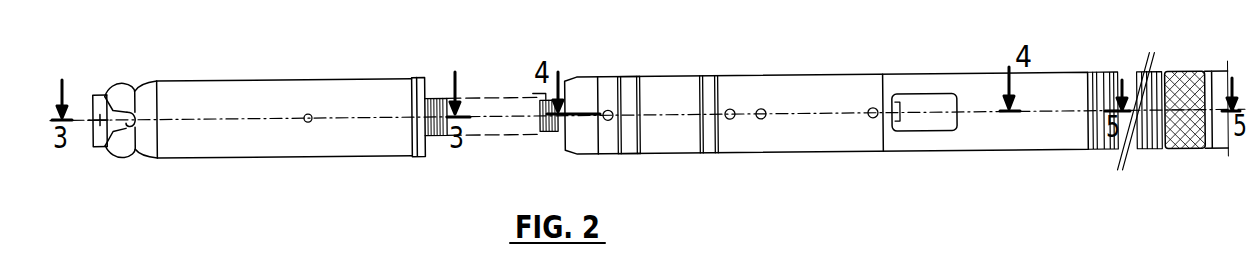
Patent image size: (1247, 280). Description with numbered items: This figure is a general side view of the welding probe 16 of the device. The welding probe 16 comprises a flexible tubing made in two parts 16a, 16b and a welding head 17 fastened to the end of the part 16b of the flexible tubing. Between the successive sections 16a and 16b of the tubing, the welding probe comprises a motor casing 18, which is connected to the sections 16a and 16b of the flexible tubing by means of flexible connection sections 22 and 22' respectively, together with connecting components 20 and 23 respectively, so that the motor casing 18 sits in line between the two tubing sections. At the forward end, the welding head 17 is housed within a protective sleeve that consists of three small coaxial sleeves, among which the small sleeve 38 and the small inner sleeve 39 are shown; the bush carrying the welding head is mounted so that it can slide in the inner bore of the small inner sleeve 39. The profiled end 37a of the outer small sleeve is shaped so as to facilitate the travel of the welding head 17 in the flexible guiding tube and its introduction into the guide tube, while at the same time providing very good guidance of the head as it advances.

The welding probe 16 is at (840, 156).
The first part of the flexible tubing 16a is at (1218, 87).
The second part of the flexible tubing 16b is at (489, 100).
The welding head 17 is at (251, 143).
The motor casing 18 is at (760, 100).
The connecting component 20 is at (1181, 88).
The flexible connection section 22 is at (630, 92).
The flexible connection section 22' is at (1107, 85).
The connecting component 23 is at (586, 90).
The profiled end of the small sleeve 37a is at (135, 100).
The small coaxial sleeve 38 is at (136, 158).
The small inner sleeve 39 is at (97, 142).